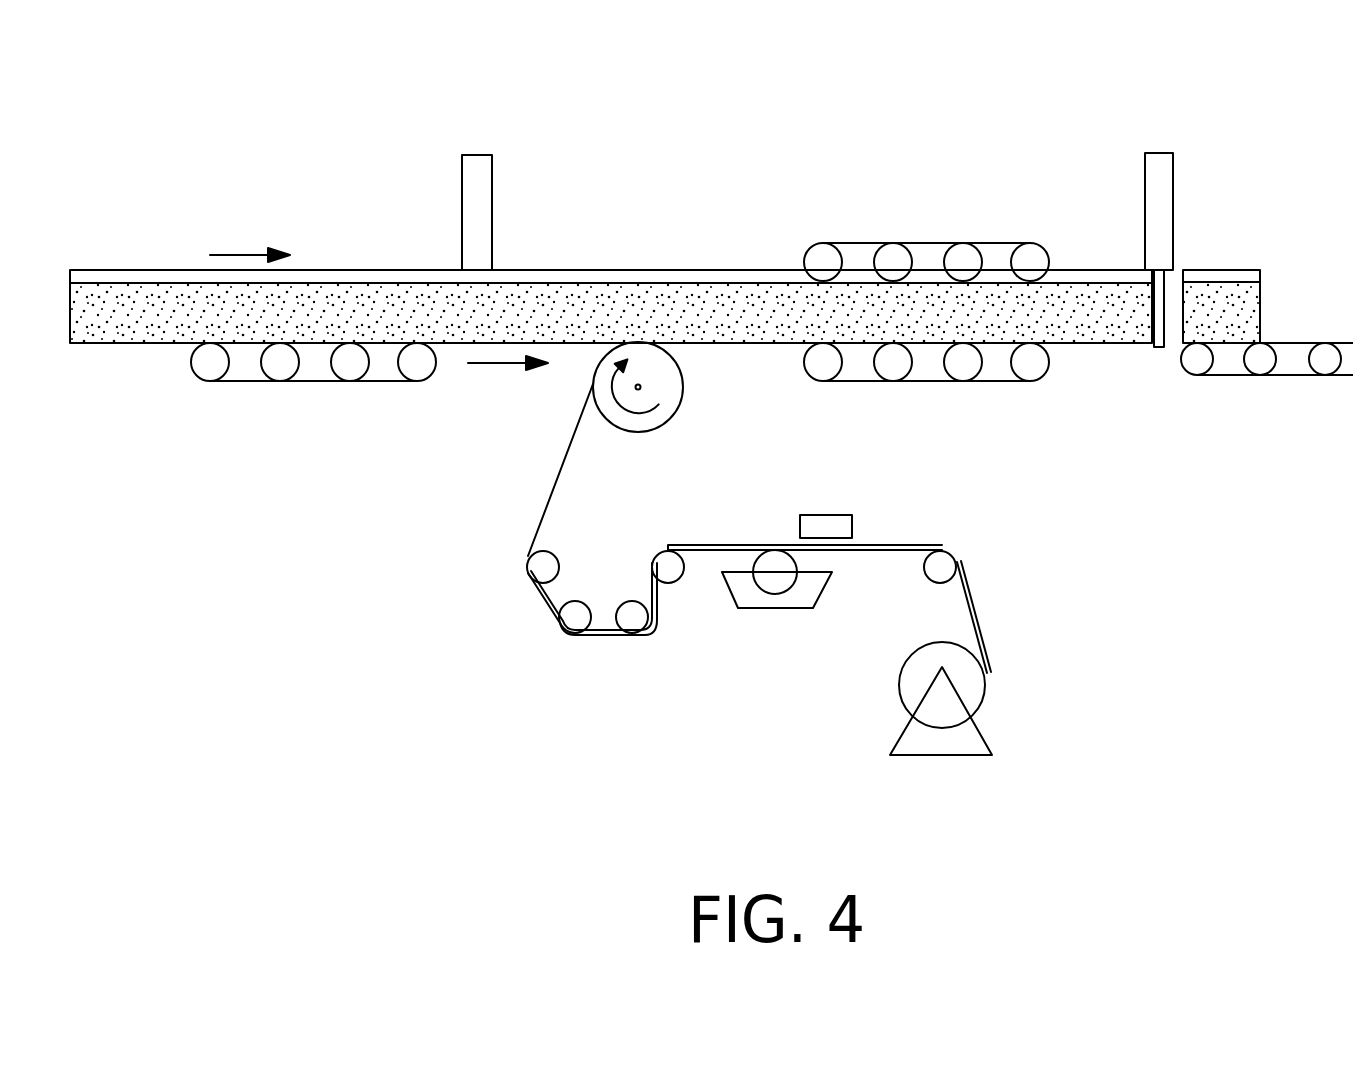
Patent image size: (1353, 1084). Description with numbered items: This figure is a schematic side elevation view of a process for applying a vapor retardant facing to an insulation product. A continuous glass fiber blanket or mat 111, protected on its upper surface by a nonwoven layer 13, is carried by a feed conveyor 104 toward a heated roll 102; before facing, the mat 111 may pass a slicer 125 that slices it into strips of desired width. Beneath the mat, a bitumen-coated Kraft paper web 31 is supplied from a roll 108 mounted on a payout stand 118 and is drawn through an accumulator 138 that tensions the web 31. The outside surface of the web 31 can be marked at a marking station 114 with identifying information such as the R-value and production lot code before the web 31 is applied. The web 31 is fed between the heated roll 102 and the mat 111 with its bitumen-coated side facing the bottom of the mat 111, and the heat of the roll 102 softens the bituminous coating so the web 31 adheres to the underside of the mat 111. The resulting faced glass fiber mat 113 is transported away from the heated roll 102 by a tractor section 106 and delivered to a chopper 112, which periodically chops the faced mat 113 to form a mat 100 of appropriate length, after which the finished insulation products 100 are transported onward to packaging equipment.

The continuous glass fiber blanket or mat 111 is at (143, 313).
The faced glass fiber mat 113 is at (613, 307).
The nonwoven layer 13 is at (348, 277).
The slicer 125 is at (482, 198).
The chopper 112 is at (1158, 167).
The mat 100 is at (1222, 300).
The feed conveyor 104 is at (315, 360).
The tractor section 106 is at (922, 363).
The heated roll 102 is at (665, 386).
The Kraft paper web 31 is at (555, 483).
The accumulator 138 is at (572, 618).
The marking station 114 is at (822, 525).
The roll 108 is at (917, 678).
The payout stand 118 is at (942, 702).